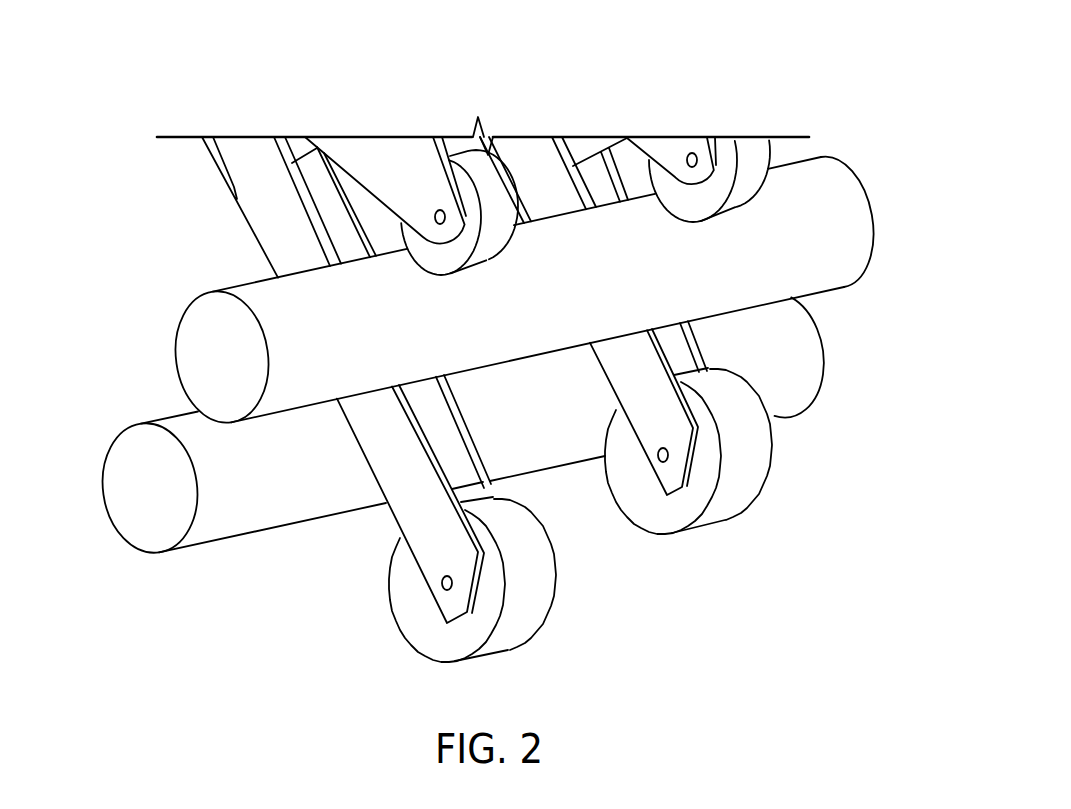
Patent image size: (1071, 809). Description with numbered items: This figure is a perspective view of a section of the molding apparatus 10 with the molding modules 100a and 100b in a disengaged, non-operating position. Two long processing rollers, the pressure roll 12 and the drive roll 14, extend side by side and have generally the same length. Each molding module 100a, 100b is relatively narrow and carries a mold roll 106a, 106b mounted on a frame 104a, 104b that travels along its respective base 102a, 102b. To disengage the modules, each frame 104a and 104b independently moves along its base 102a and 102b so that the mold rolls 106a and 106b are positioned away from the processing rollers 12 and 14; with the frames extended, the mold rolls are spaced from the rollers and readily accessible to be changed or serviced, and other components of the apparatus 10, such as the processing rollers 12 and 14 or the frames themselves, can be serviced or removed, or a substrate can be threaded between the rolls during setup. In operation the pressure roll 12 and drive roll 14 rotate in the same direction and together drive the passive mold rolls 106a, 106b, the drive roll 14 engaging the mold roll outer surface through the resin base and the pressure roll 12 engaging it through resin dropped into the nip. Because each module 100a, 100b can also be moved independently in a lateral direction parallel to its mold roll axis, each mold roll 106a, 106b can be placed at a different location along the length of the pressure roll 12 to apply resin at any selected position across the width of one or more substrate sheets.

The molding apparatus 10 is at (867, 48).
The pressure roll 12 is at (135, 473).
The drive roll 14 is at (200, 333).
The molding module 100a is at (290, 205).
The molding module 100b is at (739, 136).
The base 102a is at (233, 184).
The base 102b is at (575, 145).
The frame 104a is at (355, 433).
The frame 104b is at (618, 367).
The mold roll 106a is at (417, 600).
The mold roll 106b is at (662, 502).